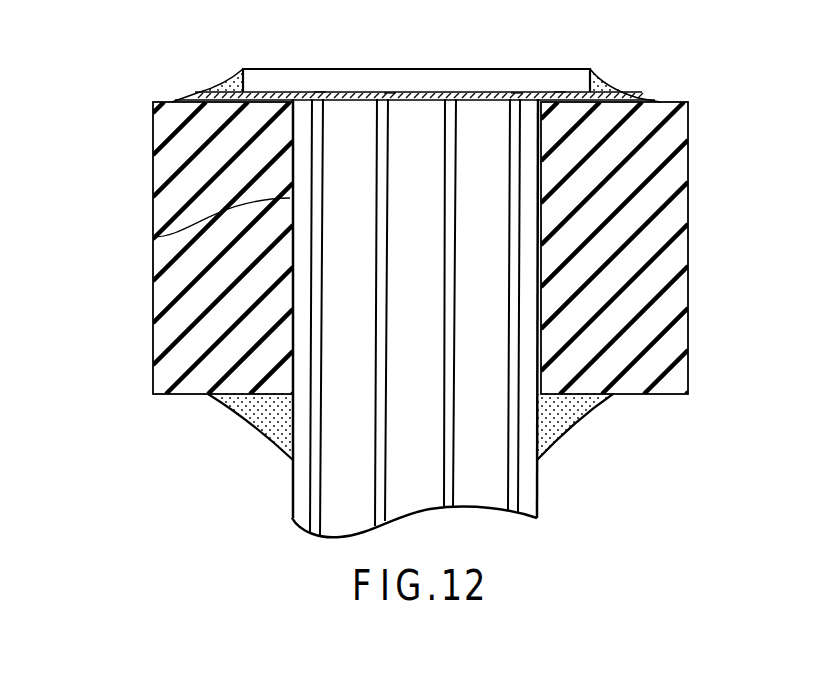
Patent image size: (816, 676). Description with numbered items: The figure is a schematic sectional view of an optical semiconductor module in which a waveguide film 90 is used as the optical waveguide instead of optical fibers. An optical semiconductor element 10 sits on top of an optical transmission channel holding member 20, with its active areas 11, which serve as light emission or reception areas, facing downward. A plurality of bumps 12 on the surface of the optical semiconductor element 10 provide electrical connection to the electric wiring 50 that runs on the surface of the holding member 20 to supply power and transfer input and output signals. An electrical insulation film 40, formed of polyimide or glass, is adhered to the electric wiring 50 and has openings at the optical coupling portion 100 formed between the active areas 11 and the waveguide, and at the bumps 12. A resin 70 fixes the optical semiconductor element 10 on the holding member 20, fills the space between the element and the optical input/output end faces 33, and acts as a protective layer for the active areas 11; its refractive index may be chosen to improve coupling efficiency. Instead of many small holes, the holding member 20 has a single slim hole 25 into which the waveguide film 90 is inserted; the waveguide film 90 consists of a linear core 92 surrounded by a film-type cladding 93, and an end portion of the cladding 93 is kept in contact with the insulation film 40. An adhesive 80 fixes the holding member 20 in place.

The optical semiconductor element 10 is at (278, 77).
The active areas 11 is at (320, 92).
The bumps 12 is at (560, 92).
The optical transmission channel holding member 20 is at (163, 170).
The slim hole 25 is at (153, 237).
The optical input/output end faces 33 is at (517, 93).
The electrical insulation film 40 is at (617, 90).
The electric wiring 50 is at (638, 98).
The resin 70 is at (231, 81).
The adhesive 80 is at (232, 418).
The waveguide film 90 is at (530, 497).
The linear core 92 is at (517, 217).
The film-type cladding 93 is at (528, 293).
The optical coupling portion 100 is at (390, 93).